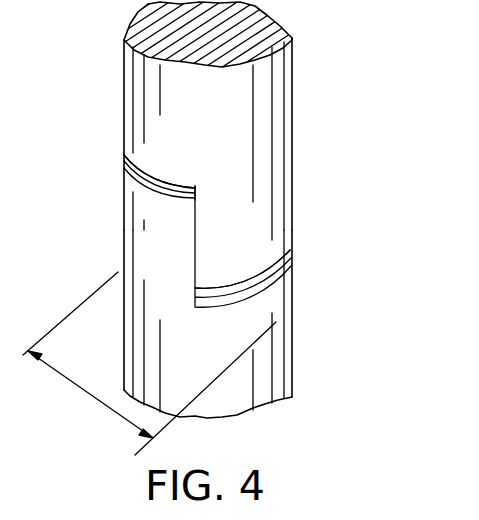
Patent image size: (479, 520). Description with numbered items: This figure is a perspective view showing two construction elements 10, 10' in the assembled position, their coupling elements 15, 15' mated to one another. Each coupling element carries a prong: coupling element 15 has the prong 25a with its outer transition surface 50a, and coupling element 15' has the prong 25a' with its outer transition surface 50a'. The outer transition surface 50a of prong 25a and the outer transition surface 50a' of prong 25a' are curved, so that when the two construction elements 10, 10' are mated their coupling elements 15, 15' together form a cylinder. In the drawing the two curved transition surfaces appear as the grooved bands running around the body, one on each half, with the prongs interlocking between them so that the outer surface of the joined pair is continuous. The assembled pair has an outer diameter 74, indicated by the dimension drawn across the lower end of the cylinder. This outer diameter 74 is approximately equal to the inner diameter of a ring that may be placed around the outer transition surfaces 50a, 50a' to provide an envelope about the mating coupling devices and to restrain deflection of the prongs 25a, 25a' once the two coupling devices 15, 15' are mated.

The construction element 10 is at (212, 115).
The coupling element 15 is at (244, 141).
The prong 25a is at (259, 179).
The outer transition surface 50a is at (295, 246).
The prong 25a' is at (116, 186).
The outer transition surface 50a' is at (166, 267).
The construction element 10' is at (260, 324).
The coupling element 15' is at (248, 321).
The outer diameter 74 is at (86, 390).